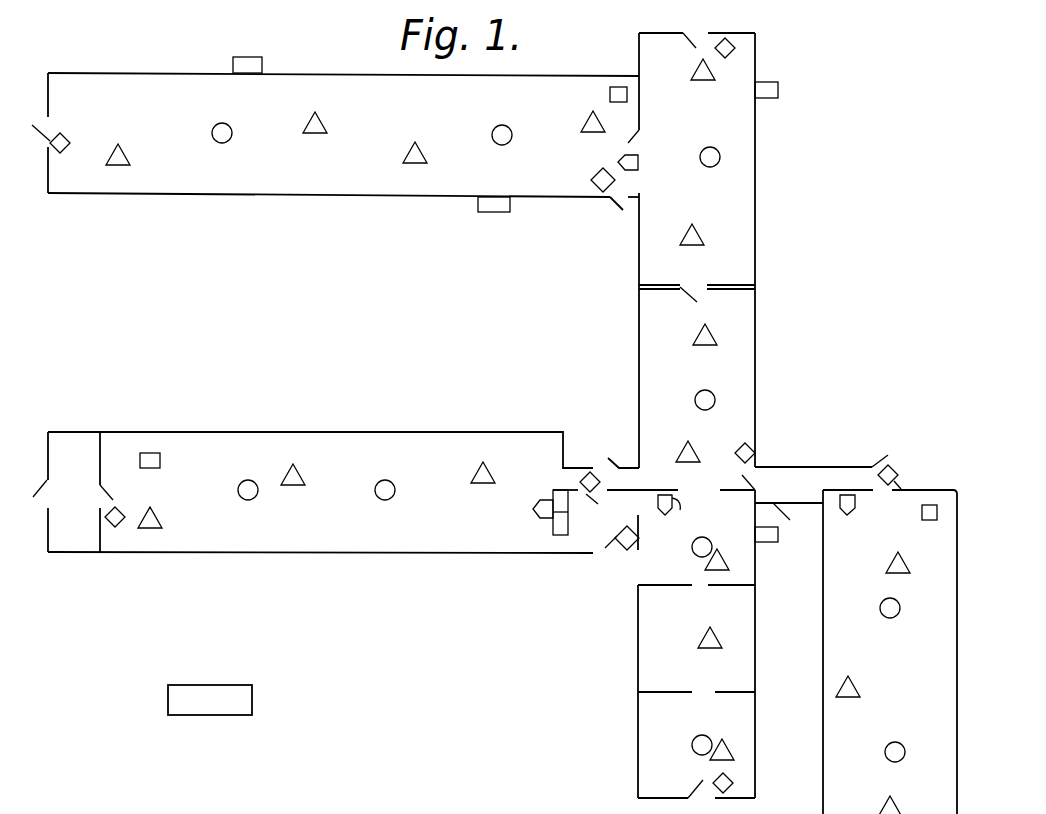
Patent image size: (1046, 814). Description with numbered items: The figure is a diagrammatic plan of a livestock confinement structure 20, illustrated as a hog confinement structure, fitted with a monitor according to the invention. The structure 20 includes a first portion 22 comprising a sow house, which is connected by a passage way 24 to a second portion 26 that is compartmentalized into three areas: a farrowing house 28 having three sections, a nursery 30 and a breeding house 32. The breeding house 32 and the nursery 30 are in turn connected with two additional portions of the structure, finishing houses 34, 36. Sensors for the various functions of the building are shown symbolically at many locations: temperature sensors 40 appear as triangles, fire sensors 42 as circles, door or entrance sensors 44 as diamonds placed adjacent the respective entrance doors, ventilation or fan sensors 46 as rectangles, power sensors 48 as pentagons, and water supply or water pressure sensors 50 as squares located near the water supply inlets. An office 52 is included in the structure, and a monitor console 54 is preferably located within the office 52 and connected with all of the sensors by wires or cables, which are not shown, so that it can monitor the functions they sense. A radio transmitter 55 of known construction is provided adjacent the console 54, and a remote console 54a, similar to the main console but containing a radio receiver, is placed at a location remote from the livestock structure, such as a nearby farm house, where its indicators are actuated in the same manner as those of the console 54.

The livestock confinement structure 20 is at (840, 78).
The first portion 22 is at (823, 806).
The passage way 24 is at (804, 466).
The second portion 26 is at (766, 400).
The farrowing house 28 is at (639, 628).
The nursery 30 is at (639, 348).
The breeding house 32 is at (755, 198).
The finishing house 34 is at (340, 202).
The finishing house 36 is at (322, 390).
The temperature sensor 40 is at (704, 236).
The fire sensor 42 is at (699, 390).
The door or entrance sensor 44 is at (66, 134).
The ventilation or fan sensor 46 is at (266, 61).
The power sensor 48 is at (618, 162).
The water supply or water pressure sensor 50 is at (610, 90).
The office 52 is at (566, 540).
The monitor console 54 is at (547, 527).
The remote console 54a is at (218, 685).
The radio transmitter 55 is at (552, 490).